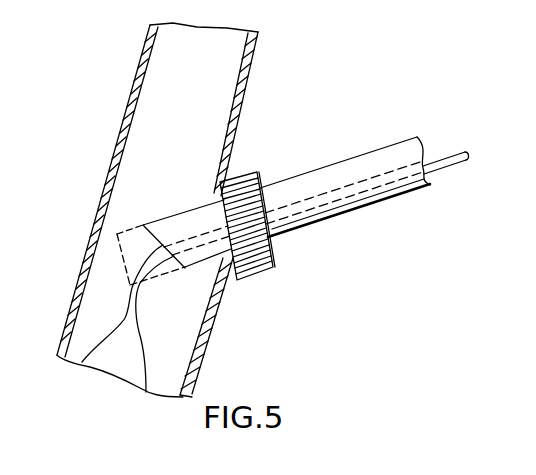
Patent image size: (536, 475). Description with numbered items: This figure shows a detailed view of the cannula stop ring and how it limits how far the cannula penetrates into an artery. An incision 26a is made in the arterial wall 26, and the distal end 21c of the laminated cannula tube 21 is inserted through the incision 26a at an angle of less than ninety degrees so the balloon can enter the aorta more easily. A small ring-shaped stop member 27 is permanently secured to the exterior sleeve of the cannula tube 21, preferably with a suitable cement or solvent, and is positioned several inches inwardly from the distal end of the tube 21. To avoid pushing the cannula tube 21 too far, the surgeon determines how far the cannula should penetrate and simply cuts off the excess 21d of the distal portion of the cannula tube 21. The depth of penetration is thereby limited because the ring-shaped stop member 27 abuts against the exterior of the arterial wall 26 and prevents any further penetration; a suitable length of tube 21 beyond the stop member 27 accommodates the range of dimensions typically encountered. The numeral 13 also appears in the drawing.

The wire / cable 13 is at (128, 297).
The laminated cannula tube 21 is at (334, 163).
The distal end of the laminated cannula tube 21c is at (120, 277).
The excess of the distal portion of the laminated cannula tube 21d is at (130, 233).
The arterial wall 26 is at (213, 319).
The incision 26a is at (214, 287).
The ring-shaped stop member 27 is at (244, 173).